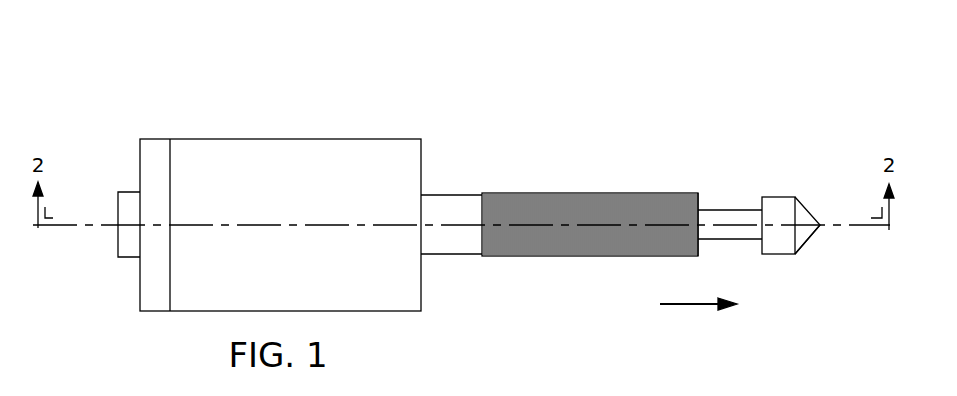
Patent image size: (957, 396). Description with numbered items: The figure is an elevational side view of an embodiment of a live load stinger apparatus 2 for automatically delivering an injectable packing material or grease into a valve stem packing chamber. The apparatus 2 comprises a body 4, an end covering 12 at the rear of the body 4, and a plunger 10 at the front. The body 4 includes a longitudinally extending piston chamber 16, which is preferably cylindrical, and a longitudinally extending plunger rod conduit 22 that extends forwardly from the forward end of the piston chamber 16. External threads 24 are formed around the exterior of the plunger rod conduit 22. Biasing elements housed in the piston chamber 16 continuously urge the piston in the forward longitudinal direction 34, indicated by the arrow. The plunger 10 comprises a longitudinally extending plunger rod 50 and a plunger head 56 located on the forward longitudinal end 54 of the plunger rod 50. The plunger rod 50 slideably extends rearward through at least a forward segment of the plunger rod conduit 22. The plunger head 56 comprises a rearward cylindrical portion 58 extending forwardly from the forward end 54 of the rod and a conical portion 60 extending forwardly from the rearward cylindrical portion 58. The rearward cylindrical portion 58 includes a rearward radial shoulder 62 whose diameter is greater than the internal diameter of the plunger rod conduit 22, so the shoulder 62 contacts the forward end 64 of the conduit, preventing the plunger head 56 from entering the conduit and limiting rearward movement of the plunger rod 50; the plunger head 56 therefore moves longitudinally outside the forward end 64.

The live load stinger apparatus 2 is at (233, 86).
The body 4 is at (193, 312).
The plunger 10 is at (728, 210).
The end covering 12 is at (156, 139).
The piston chamber 16 is at (289, 148).
The plunger rod conduit 22 is at (463, 198).
The external threads 24 is at (551, 194).
The forward longitudinal direction 34 is at (690, 306).
The plunger rod 50 is at (731, 221).
The forward longitudinal end of plunger rod 54 is at (757, 240).
The plunger head 56 is at (783, 255).
The rearward cylindrical portion 58 is at (793, 258).
The conical portion 60 is at (810, 240).
The rearward radial shoulder 62 is at (765, 197).
The forward end of plunger rod conduit 64 is at (706, 194).